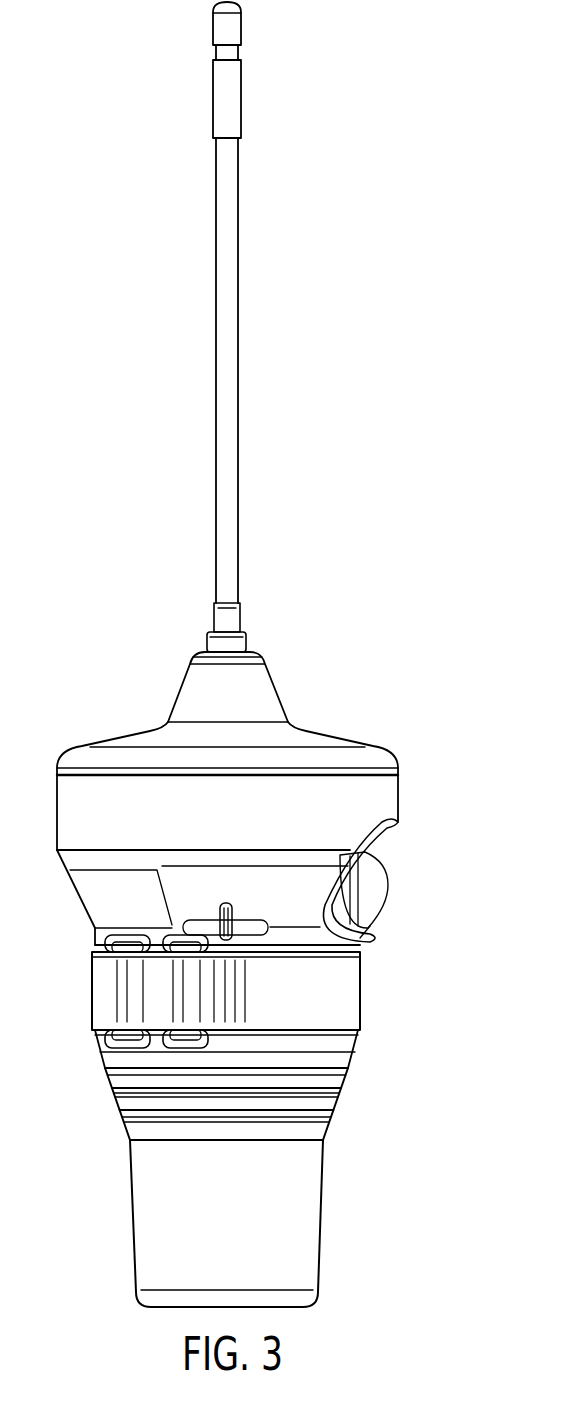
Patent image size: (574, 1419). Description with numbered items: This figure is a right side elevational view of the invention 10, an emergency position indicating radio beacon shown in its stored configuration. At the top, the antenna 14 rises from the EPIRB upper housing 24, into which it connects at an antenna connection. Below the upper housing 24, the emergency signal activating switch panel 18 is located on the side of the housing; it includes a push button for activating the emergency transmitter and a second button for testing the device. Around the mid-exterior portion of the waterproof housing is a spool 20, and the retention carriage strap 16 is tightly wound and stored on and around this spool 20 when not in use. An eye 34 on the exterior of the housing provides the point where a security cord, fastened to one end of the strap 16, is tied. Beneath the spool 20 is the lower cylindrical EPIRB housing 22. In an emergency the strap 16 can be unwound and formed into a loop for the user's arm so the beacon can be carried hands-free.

The invention 10 is at (342, 592).
The antenna 14 is at (238, 540).
The retention carriage strap 16 is at (362, 990).
The emergency signal activating switch panel 18 is at (380, 938).
The spool 20 is at (362, 1035).
The lower cylindrical EPIRB housing 22 is at (322, 1210).
The EPIRB upper housing 24 is at (330, 735).
The eye 34 is at (233, 910).